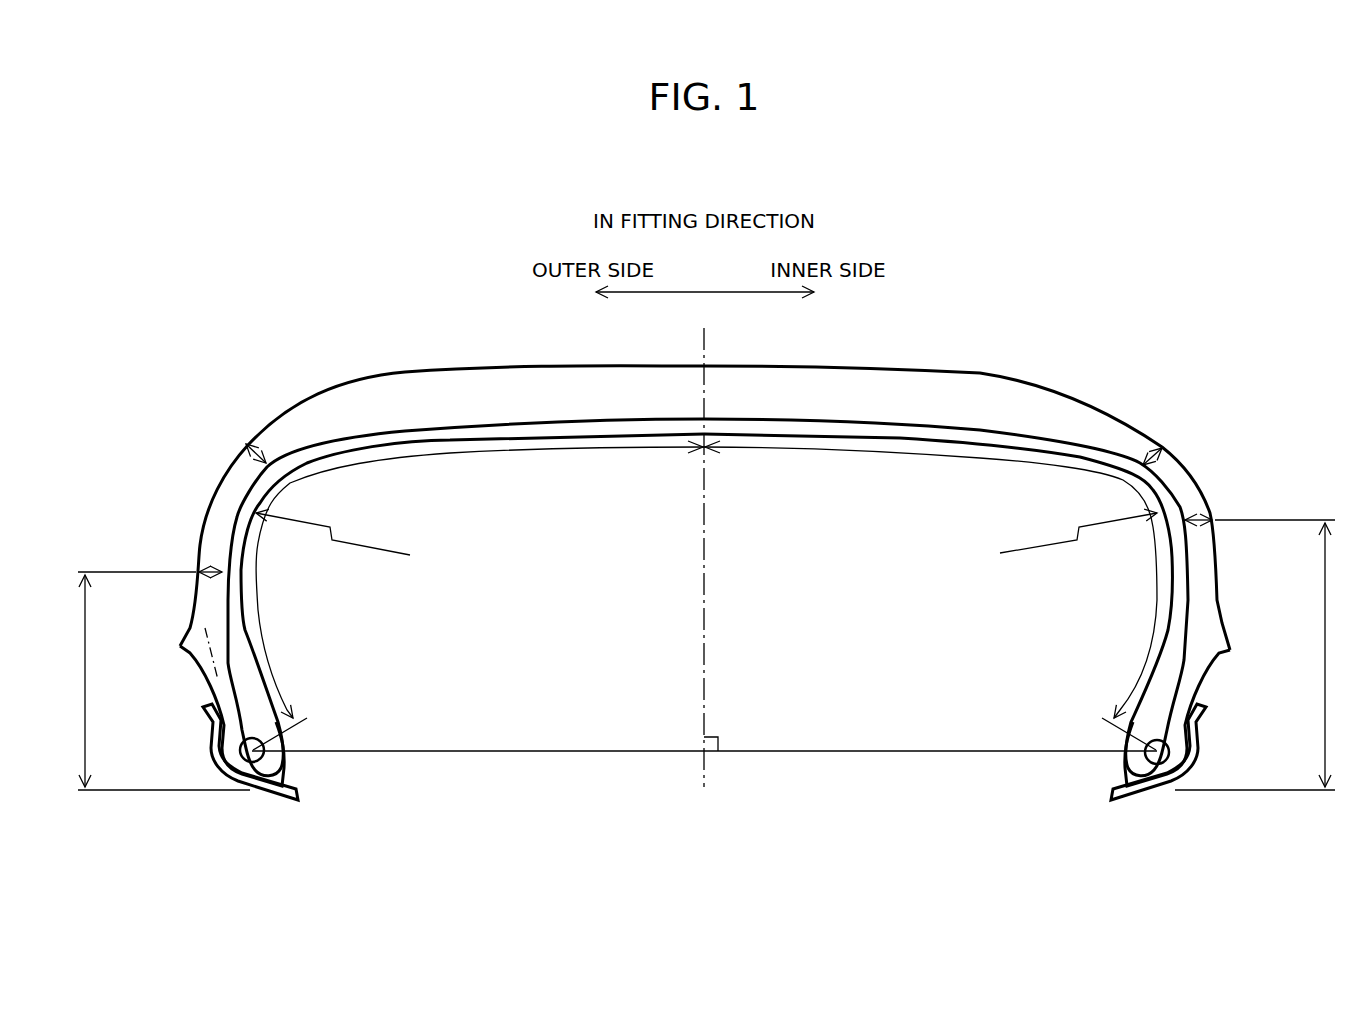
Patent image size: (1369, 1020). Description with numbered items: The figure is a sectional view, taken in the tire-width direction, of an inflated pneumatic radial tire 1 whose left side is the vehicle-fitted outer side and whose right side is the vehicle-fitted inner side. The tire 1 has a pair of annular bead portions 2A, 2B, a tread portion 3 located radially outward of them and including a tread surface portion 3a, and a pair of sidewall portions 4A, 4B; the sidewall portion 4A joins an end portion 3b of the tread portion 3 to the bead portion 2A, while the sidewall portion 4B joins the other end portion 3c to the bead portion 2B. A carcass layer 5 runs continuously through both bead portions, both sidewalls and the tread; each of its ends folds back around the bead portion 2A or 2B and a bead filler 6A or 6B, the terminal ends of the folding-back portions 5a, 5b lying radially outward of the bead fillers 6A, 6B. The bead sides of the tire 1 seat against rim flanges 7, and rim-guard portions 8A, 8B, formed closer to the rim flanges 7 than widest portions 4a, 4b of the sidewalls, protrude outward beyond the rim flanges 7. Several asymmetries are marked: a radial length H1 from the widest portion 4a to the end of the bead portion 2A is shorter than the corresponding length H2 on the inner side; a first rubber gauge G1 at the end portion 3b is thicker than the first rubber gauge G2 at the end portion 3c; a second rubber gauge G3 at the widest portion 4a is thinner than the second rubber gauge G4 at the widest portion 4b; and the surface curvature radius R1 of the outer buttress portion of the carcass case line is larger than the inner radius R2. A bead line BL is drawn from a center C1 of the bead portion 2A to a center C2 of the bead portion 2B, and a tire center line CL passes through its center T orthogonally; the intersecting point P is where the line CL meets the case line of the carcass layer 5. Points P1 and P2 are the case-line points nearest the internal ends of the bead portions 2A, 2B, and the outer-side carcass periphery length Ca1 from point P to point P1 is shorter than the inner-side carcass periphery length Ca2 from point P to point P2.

The pneumatic radial tire 1 is at (974, 366).
The bead portion 2A is at (248, 752).
The bead portion 2B is at (1163, 753).
The tread portion 3 is at (404, 370).
The tread surface portion 3a is at (500, 366).
The end portion 3b is at (248, 445).
The end portion 3c is at (1162, 447).
The sidewall portion 4A is at (218, 492).
The sidewall portion 4B is at (1200, 483).
The widest portion 4a is at (200, 571).
The widest portion 4b is at (1213, 522).
The carcass layer 5 is at (821, 415).
The folding-back portion 5a is at (222, 640).
The folding-back portion 5b is at (1183, 645).
The bead filler 6A is at (240, 673).
The bead filler 6B is at (1173, 675).
The rim flange 7 is at (203, 716).
The rim-guard portion 8A is at (193, 640).
The rim-guard portion 8B is at (1217, 640).
The intersecting point P is at (705, 419).
The point P1 is at (273, 742).
The point P2 is at (1143, 752).
The center C1 is at (272, 760).
The center C2 is at (1150, 757).
The tire center line CL is at (706, 621).
The bead line BL is at (483, 753).
The center T is at (703, 752).
The length H1 is at (145, 681).
The length H2 is at (1269, 655).
The first rubber gauge G1 is at (272, 442).
The first rubber gauge G2 is at (1134, 443).
The second rubber gauge G3 is at (222, 571).
The second rubber gauge G4 is at (1212, 514).
The surface curvature radius R1 is at (365, 533).
The surface curvature radius R2 is at (1050, 534).
The outer-side carcass periphery length Ca1 is at (591, 463).
The inner-side carcass periphery length Ca2 is at (789, 463).